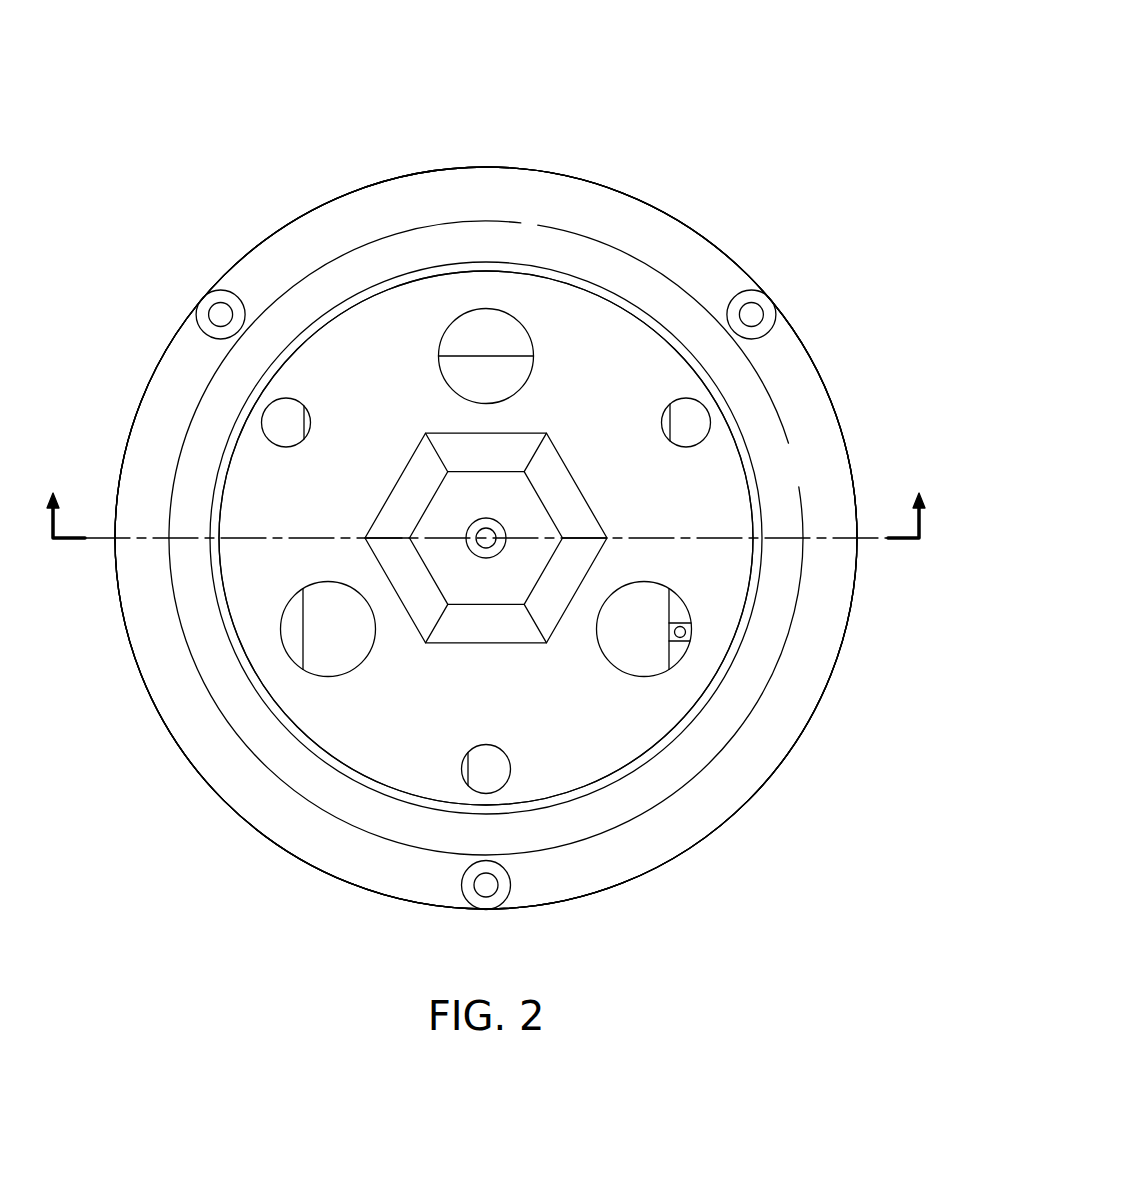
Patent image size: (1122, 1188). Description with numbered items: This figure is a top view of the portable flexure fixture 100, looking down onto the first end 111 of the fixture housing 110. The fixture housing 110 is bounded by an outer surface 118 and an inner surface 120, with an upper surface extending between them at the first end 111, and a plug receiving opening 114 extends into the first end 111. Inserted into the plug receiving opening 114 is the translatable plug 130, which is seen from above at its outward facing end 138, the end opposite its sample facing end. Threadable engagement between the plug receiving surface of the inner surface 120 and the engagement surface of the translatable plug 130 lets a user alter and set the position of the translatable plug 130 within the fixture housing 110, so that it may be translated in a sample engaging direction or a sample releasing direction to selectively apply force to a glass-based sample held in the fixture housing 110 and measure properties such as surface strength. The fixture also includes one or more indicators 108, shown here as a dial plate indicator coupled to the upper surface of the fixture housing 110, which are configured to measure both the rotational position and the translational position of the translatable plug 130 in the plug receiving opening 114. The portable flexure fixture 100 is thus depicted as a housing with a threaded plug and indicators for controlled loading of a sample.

The portable flexure fixture 100 is at (485, 466).
The indicators 108 is at (168, 361).
The fixture housing 110 is at (486, 521).
The first end 111 is at (486, 493).
The plug receiving opening 114 is at (486, 493).
The outer surface 118 is at (133, 657).
The inner surface 120 is at (205, 688).
The translatable plug 130 is at (737, 481).
The outward facing end 138 is at (563, 407).